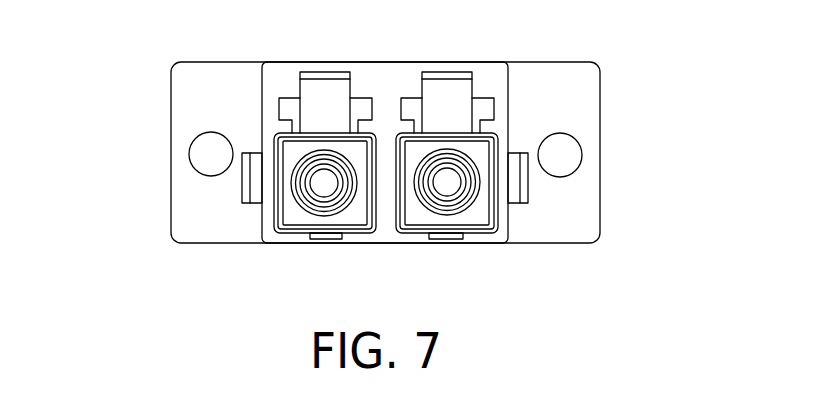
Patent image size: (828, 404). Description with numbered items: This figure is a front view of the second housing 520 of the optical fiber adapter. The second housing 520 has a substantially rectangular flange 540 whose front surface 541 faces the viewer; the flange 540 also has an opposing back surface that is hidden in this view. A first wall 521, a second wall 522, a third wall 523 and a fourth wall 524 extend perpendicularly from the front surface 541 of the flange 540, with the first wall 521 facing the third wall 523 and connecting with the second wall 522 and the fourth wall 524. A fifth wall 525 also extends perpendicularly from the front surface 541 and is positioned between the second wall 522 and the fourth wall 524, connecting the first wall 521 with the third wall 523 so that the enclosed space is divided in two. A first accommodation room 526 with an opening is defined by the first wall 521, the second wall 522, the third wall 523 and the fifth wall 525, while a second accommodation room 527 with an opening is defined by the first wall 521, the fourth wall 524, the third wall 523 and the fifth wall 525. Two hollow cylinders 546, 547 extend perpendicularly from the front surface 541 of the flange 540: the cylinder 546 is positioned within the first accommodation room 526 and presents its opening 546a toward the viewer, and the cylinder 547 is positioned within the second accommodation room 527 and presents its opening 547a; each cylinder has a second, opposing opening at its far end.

The second housing 520 is at (104, 84).
The first wall 521 is at (381, 79).
The second wall 522 is at (267, 165).
The third wall 523 is at (372, 237).
The fourth wall 524 is at (502, 187).
The fifth wall 525 is at (382, 204).
The first accommodation room 526 is at (315, 80).
The second accommodation room 527 is at (443, 80).
The flange 540 is at (599, 118).
The front surface 541 is at (577, 213).
The hollow cylinder 546 is at (300, 202).
The opening 546a is at (323, 188).
The hollow cylinder 547 is at (457, 213).
The opening 547a is at (450, 185).